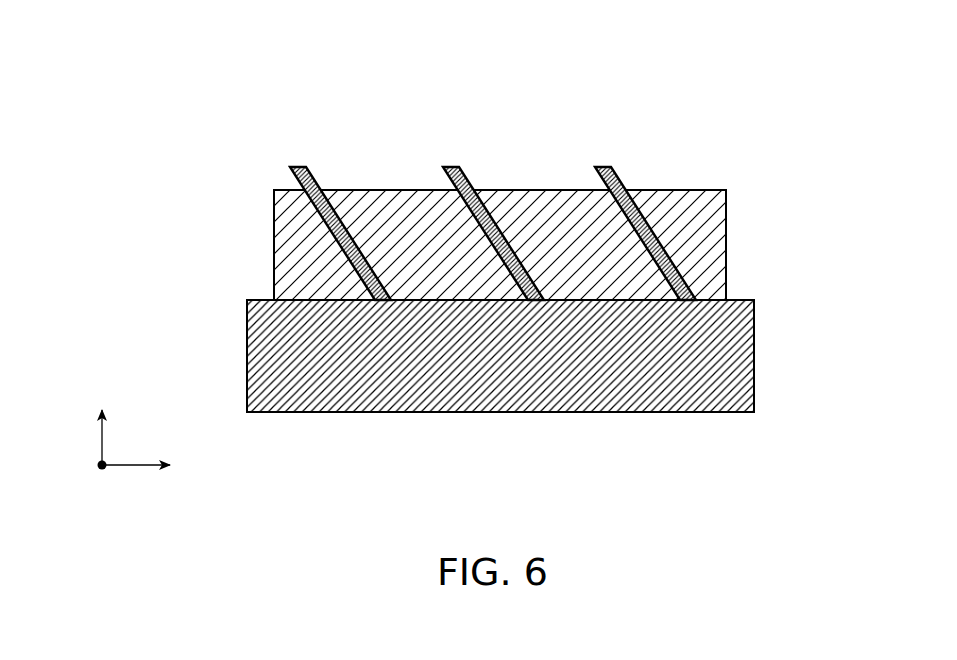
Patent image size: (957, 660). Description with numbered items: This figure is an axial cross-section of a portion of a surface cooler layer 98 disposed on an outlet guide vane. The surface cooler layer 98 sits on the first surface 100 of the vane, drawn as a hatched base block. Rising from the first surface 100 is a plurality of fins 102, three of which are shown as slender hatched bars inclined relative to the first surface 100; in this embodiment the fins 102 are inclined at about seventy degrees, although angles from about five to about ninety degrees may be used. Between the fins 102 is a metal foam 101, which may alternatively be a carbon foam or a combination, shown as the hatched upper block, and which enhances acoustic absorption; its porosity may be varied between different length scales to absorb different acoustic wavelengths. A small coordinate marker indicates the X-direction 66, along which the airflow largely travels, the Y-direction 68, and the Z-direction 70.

The surface cooler layer 98 is at (560, 231).
The first surface 100 is at (740, 370).
The metal foam 101 is at (728, 240).
The plurality of fins 102 is at (597, 170).
The X-direction 66 is at (166, 463).
The Y-direction 68 is at (106, 411).
The Z-direction 70 is at (98, 464).